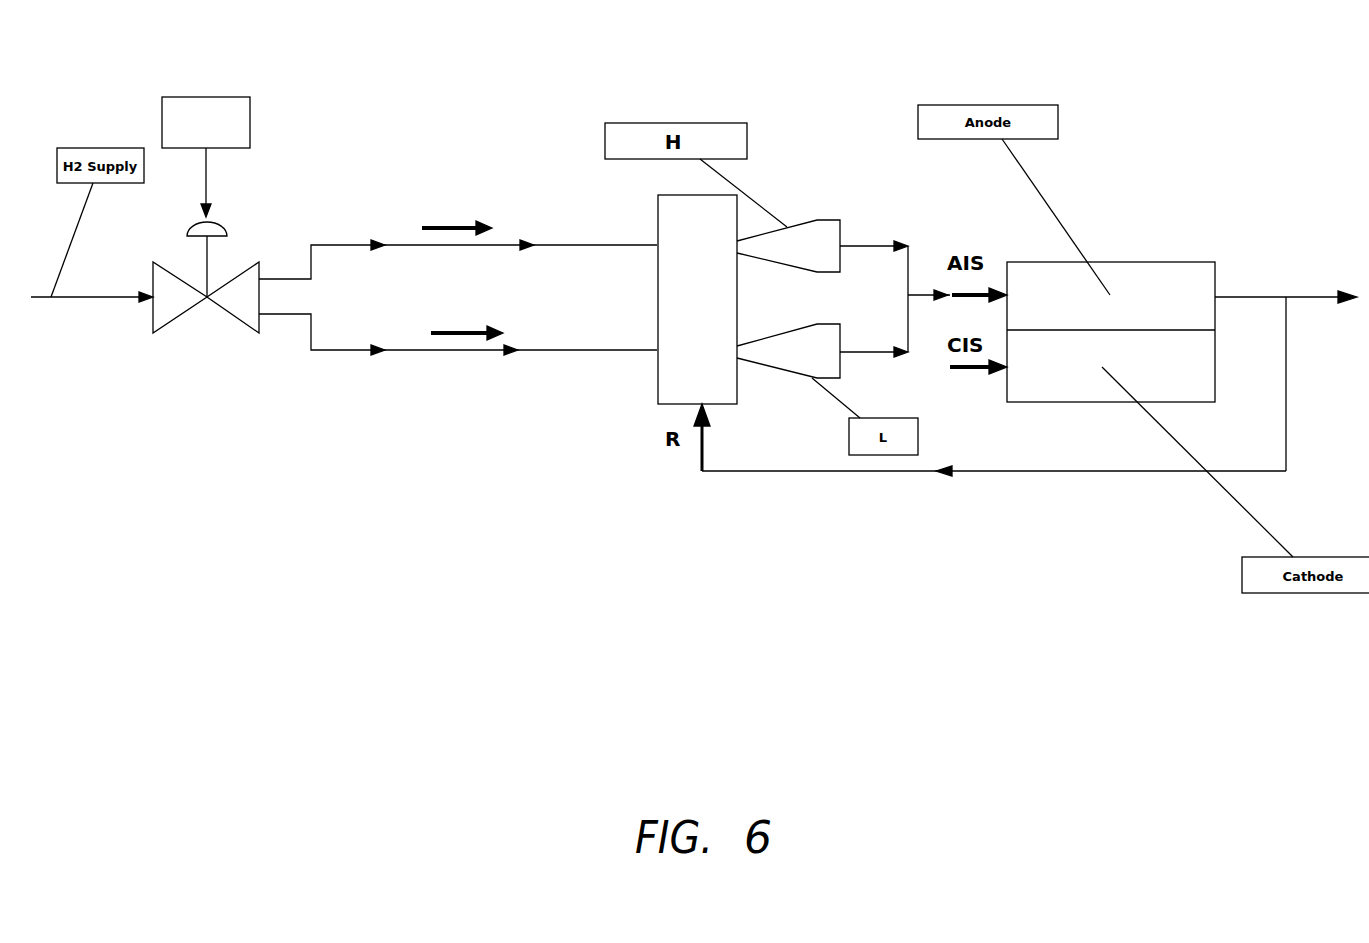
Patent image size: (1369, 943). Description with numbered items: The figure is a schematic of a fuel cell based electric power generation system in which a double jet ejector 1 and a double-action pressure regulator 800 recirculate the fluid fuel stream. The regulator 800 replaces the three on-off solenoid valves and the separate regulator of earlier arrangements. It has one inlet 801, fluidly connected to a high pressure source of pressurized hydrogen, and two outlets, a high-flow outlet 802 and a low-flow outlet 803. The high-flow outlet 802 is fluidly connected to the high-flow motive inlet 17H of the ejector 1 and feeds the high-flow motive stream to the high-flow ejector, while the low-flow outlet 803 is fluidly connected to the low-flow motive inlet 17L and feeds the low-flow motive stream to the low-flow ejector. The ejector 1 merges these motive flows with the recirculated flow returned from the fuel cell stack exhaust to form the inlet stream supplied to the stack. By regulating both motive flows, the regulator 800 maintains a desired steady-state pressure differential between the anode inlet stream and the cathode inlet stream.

The double jet ejector 1 is at (783, 179).
The high-flow motive inlet 17H is at (640, 230).
The low-flow motive inlet 17L is at (638, 362).
The double-action pressure regulator 800 is at (206, 157).
The inlet 801 is at (145, 308).
The high-flow outlet 802 is at (267, 269).
The low-flow outlet 803 is at (267, 323).